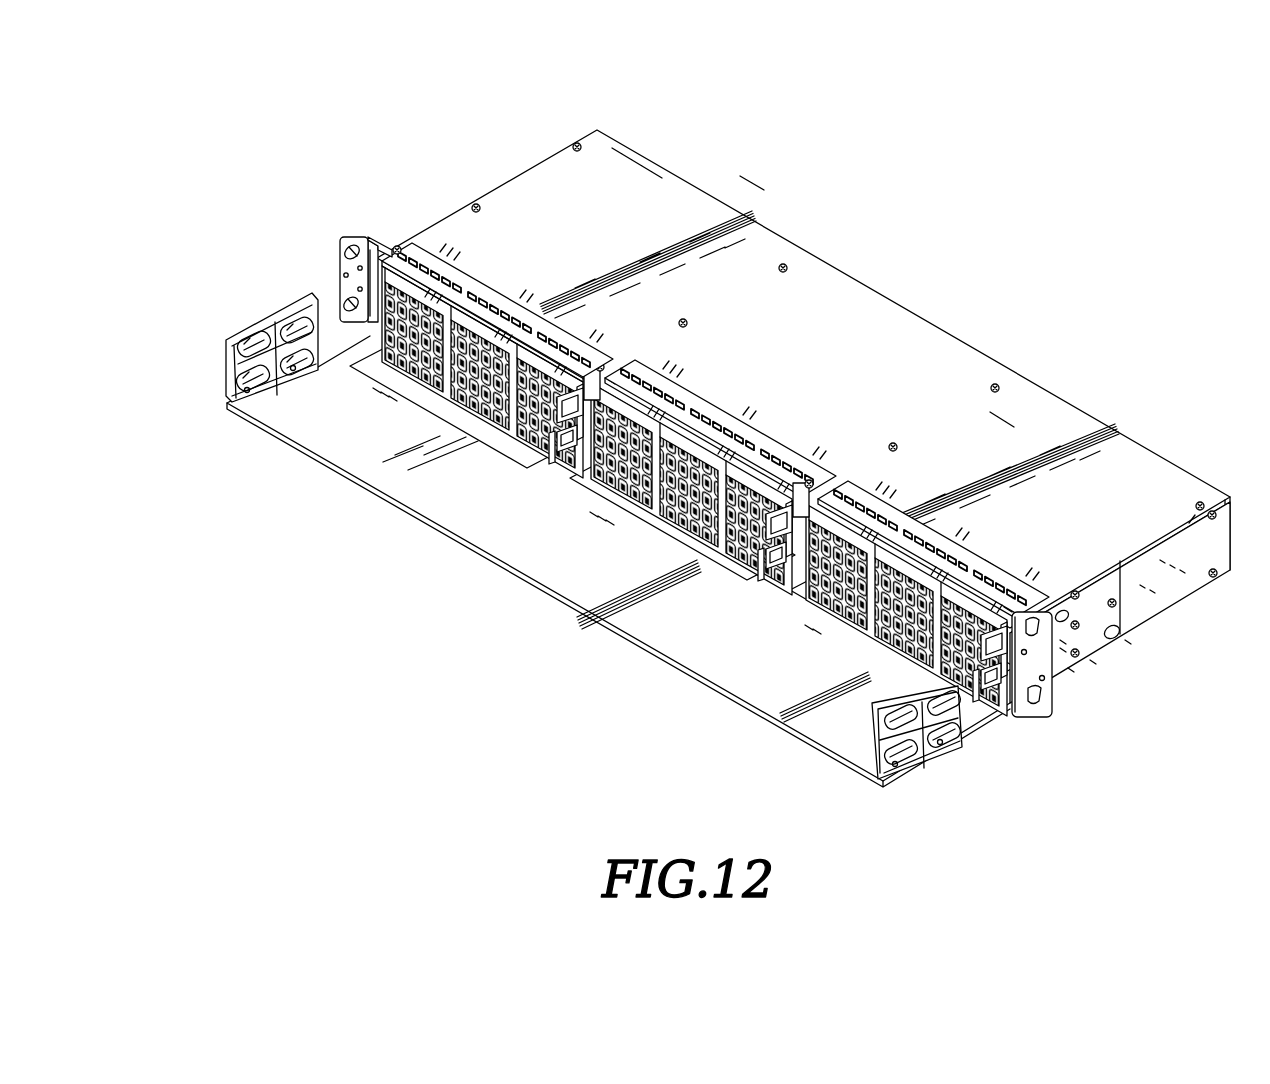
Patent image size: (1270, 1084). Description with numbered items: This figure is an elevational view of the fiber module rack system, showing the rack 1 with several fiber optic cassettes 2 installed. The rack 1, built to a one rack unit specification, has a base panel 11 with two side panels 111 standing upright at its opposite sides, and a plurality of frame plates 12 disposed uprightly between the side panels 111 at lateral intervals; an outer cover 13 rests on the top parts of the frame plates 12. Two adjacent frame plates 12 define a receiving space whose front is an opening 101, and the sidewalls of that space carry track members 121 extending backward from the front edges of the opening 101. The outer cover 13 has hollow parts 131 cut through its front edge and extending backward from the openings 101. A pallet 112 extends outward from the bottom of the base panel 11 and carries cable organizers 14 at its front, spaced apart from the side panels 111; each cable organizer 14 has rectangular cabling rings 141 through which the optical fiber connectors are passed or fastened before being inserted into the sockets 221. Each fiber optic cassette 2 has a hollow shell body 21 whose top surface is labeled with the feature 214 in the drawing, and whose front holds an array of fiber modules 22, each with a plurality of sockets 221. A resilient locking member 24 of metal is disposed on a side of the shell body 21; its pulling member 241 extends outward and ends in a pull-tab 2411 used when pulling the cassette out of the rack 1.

The rack 1 is at (729, 477).
The base panel 11 is at (1121, 602).
The side panel 111 is at (1188, 587).
The pallet 112 is at (836, 748).
The frame plate 12 is at (1005, 662).
The track member 121 is at (797, 513).
The outer cover 13 is at (803, 381).
The hollow part 131 is at (978, 560).
The cable organizer 14 is at (926, 773).
The cabling ring 141 is at (892, 777).
The opening 101 is at (988, 682).
The fiber optic cassette 2 is at (396, 387).
The shell body 21 is at (497, 263).
The vent holes 214 is at (487, 282).
The fiber module 22 is at (334, 256).
The socket 221 is at (400, 266).
The resilient locking member 24 is at (318, 556).
The pulling member 241 is at (548, 452).
The pull-tab 2411 is at (561, 462).